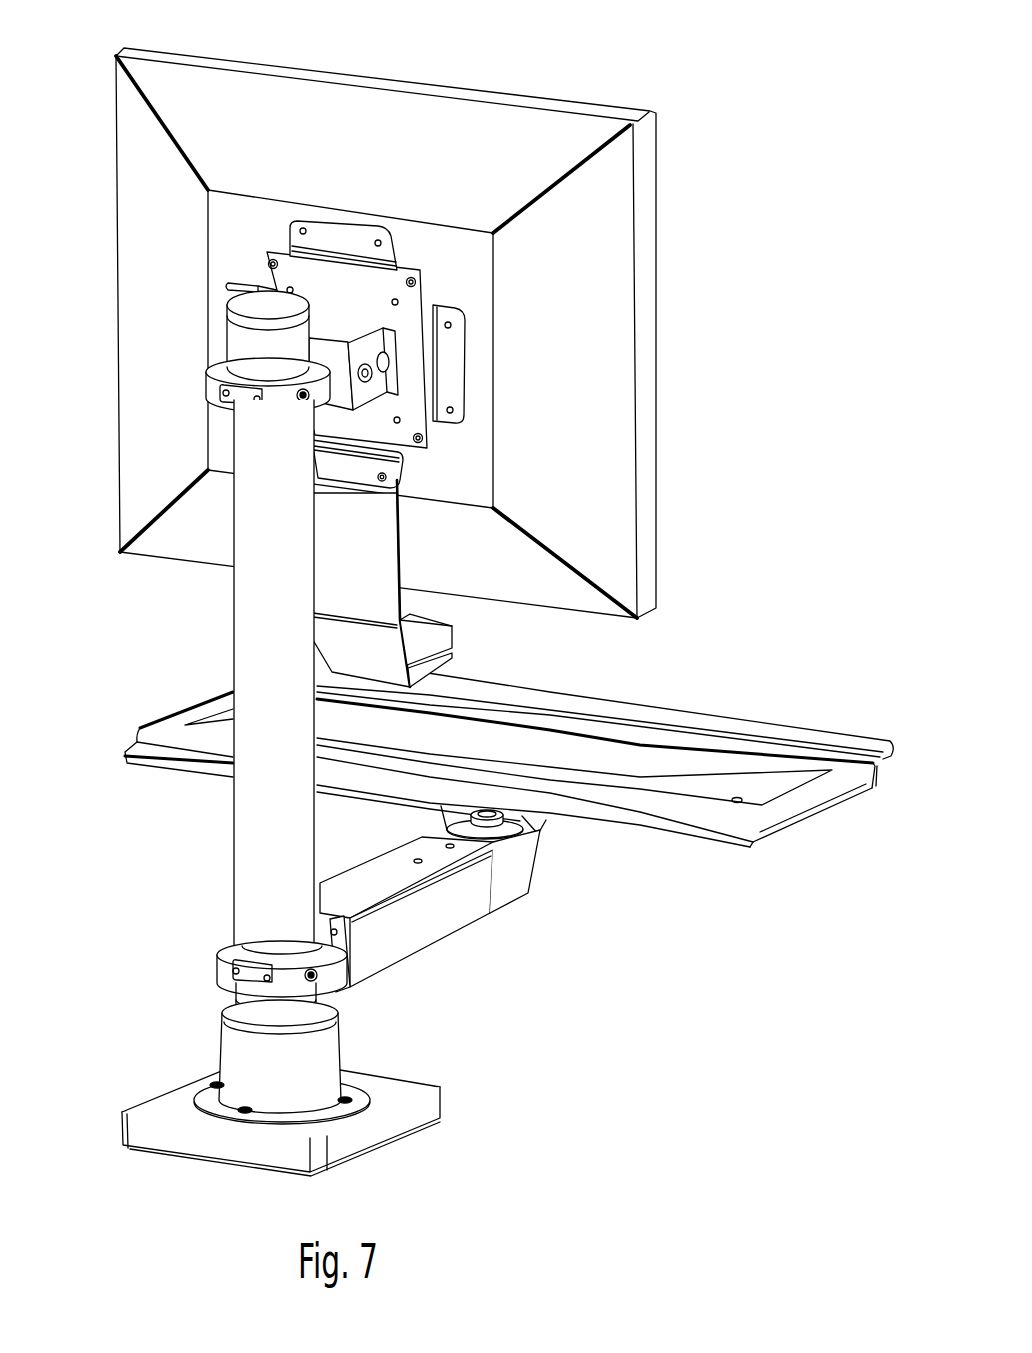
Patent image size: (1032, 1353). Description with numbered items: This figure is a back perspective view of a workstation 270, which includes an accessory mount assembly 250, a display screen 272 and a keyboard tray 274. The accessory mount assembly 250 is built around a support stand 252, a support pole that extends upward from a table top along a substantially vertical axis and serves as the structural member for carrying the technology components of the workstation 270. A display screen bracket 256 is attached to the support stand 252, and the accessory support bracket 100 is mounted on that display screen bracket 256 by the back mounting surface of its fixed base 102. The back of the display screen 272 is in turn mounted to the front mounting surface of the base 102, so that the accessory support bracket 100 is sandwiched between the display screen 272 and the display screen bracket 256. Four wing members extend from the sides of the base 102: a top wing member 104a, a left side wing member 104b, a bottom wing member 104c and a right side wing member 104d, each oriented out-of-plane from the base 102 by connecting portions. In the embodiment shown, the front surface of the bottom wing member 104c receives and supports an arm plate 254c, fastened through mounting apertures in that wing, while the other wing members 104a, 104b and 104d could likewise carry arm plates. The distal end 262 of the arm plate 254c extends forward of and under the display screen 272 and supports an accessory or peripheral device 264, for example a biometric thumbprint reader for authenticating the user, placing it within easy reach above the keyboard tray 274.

The accessory support bracket 100 is at (363, 348).
The base 102 is at (415, 390).
The top wing member 104a is at (340, 241).
The left side wing member 104b is at (447, 358).
The bottom wing member 104c is at (349, 465).
The right side wing member 104d is at (237, 290).
The accessory mount assembly 250 is at (185, 317).
The support stand 252 is at (232, 818).
The arm plate 254c is at (397, 597).
The display screen bracket 256 is at (323, 338).
The distal end 262 is at (452, 655).
The accessory or peripheral device 264 is at (440, 640).
The workstation 270 is at (727, 104).
The display screen 272 is at (580, 262).
The keyboard tray 274 is at (818, 810).